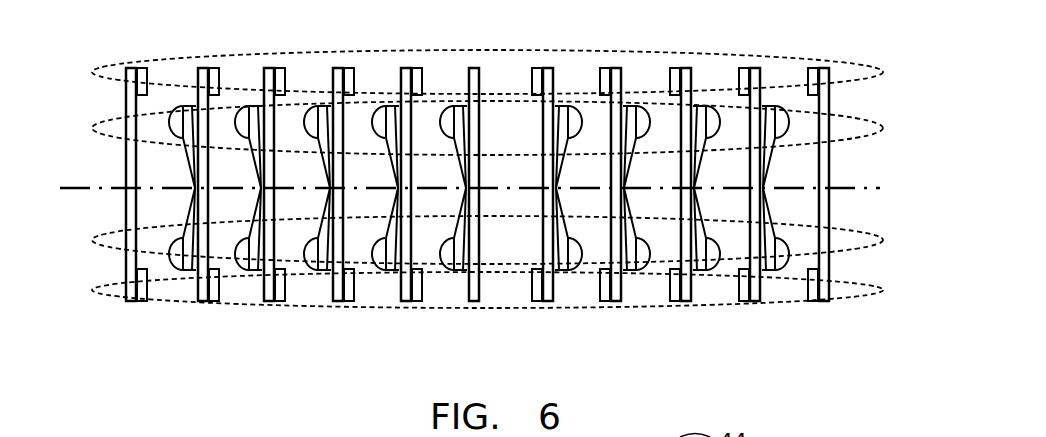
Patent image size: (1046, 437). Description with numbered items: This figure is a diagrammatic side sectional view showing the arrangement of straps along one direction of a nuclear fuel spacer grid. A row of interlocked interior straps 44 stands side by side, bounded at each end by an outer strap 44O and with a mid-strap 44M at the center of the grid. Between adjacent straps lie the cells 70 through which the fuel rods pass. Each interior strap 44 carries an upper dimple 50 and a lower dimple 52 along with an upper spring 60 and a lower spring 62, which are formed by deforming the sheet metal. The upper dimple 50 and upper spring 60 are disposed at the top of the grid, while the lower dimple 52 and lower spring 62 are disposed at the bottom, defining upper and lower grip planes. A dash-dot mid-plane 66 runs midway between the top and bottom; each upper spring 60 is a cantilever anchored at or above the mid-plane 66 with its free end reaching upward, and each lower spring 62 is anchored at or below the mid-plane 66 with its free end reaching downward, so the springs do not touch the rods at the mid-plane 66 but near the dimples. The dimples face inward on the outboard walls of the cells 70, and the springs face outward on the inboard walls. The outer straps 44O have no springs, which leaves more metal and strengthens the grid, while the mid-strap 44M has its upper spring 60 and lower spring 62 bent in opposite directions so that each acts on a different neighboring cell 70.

The interior strap 44 is at (289, 313).
The outer strap 44O is at (143, 311).
The mid-strap 44M is at (474, 316).
The upper dimple 50 is at (92, 80).
The upper spring 60 is at (92, 130).
The lower spring 62 is at (92, 248).
The lower dimple 52 is at (92, 288).
The mid-plane 66 is at (876, 186).
The cell 70 is at (585, 200).